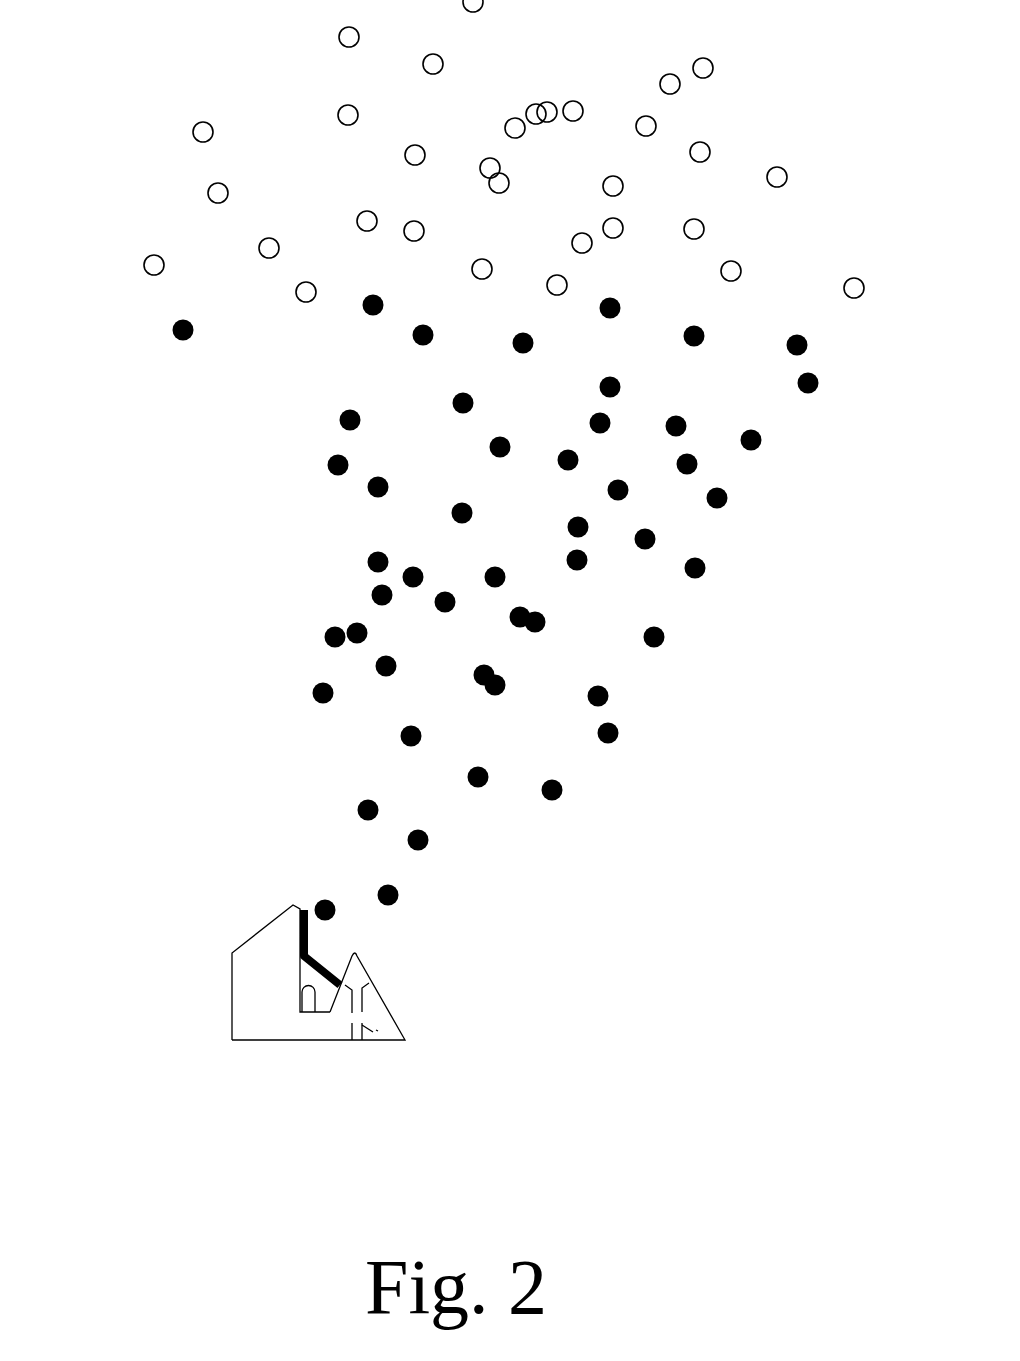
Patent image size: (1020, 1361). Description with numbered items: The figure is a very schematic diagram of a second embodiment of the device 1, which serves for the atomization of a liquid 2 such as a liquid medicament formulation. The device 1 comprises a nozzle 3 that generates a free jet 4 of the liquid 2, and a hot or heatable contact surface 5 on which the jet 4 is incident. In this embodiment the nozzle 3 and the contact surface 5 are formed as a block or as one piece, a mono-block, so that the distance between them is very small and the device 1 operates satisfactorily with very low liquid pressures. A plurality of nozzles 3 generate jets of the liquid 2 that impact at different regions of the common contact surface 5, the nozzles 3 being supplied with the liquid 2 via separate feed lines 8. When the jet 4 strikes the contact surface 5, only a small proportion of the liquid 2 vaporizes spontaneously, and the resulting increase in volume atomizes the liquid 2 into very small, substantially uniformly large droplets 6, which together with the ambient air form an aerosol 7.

The device 1 is at (228, 900).
The liquid 2 is at (342, 970).
The nozzle 3 is at (343, 978).
The jet 4 is at (318, 952).
The contact surface 5 is at (315, 998).
The droplets 6 is at (456, 400).
The aerosol 7 is at (166, 119).
The feed lines 8 is at (385, 1045).